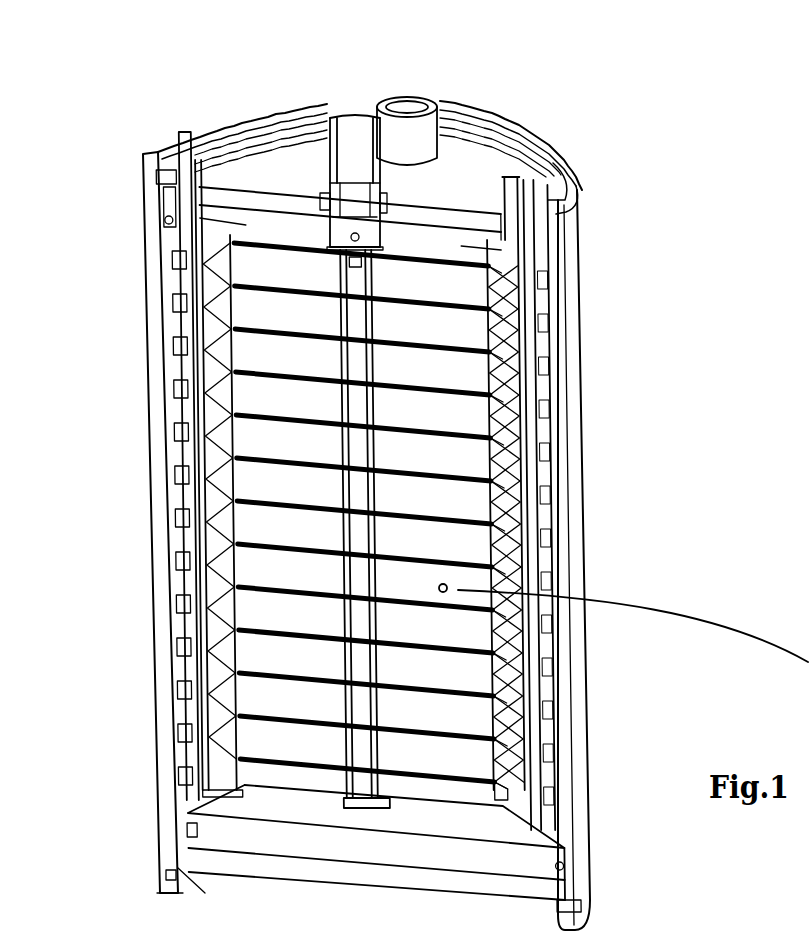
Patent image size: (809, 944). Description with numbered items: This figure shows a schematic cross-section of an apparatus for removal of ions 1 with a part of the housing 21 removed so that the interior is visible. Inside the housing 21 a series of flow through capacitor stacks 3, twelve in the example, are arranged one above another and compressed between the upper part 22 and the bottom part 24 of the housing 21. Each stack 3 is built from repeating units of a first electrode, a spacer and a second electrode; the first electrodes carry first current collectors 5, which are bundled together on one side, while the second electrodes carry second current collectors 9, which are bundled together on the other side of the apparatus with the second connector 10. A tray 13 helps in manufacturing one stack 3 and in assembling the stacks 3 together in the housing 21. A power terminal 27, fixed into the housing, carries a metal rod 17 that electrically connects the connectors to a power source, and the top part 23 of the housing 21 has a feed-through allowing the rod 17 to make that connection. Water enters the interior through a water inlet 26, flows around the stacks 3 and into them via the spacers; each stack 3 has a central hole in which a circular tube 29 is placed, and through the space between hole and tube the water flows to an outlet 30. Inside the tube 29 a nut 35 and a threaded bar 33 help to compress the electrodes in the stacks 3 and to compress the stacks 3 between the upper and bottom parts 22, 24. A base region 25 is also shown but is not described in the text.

The apparatus for removal of ions 1 is at (108, 188).
The flow through capacitor stack 3 is at (460, 328).
The first current collector 5 is at (525, 358).
The second current collector 9 is at (200, 316).
The second connector 10 is at (168, 306).
The tray 13 is at (505, 297).
The rod 17 is at (525, 456).
The housing 21 is at (540, 290).
The upper part 22 is at (478, 252).
The top part 23 is at (478, 222).
The bottom part 24 is at (470, 798).
The base housing 25 is at (530, 862).
The water inlet 26 is at (437, 112).
The power terminal 27 is at (350, 190).
The circular tube 29 is at (372, 520).
The outlet 30 is at (500, 172).
The threaded bar 33 is at (372, 683).
The nut 35 is at (497, 782).